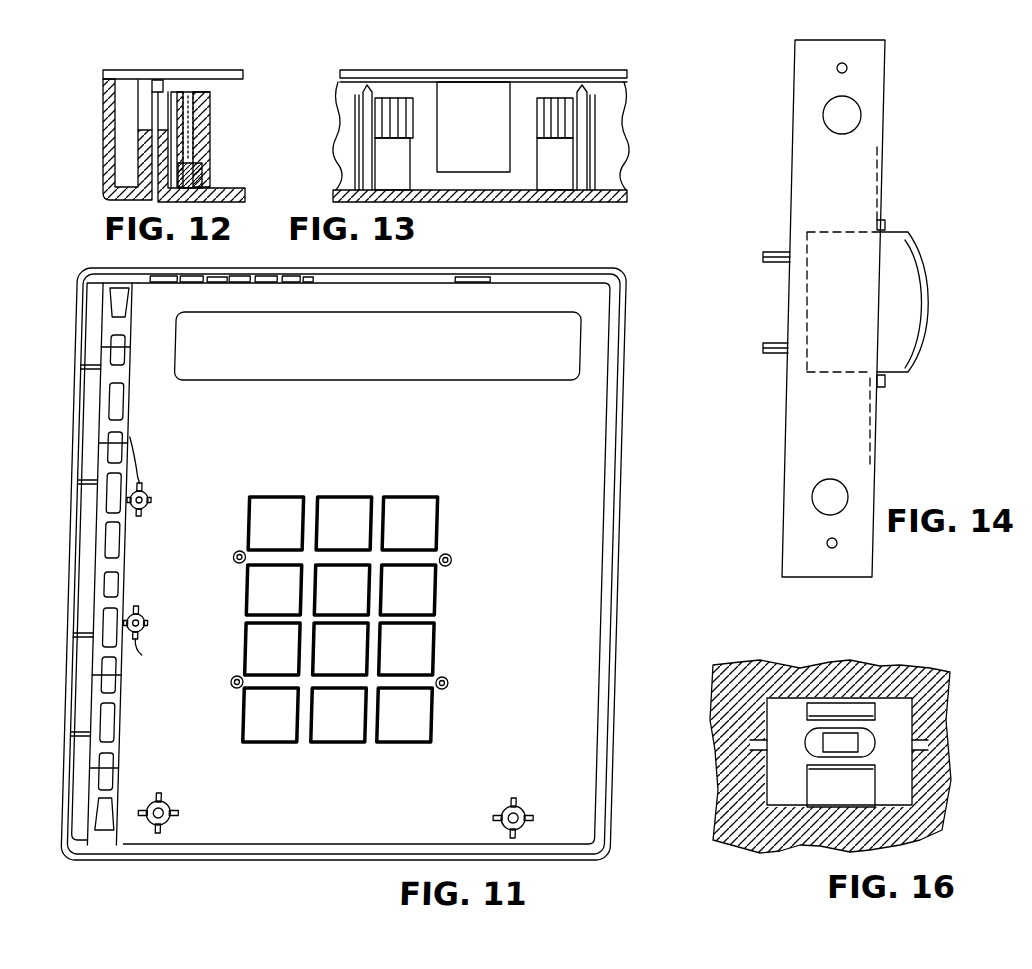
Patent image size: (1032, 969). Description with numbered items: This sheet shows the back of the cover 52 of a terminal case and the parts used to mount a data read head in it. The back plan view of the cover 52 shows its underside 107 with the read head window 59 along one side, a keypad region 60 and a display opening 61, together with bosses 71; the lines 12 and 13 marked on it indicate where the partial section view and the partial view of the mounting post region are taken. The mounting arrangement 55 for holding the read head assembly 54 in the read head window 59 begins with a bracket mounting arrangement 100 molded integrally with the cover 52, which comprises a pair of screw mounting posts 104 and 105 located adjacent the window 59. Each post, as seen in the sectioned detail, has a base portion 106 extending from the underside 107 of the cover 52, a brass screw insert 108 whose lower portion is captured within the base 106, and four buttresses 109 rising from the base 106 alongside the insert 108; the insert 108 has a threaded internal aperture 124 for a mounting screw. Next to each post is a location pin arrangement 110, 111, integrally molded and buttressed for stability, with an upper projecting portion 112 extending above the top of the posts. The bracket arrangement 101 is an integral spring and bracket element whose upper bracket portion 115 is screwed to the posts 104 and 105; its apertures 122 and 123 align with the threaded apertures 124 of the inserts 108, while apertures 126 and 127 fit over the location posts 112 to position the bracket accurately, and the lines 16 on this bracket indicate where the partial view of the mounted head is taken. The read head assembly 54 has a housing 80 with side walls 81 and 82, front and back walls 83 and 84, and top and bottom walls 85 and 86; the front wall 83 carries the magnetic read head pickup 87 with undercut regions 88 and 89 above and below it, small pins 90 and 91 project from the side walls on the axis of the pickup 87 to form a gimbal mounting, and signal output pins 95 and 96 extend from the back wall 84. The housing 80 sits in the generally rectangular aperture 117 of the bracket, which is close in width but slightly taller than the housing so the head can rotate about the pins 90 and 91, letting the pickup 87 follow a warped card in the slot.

In FIG. 11, the cover 52 is at (630, 560).
In FIG. 11, the read head window 59 is at (142, 542).
In FIG. 11, the keypad button openings 60 is at (443, 528).
In FIG. 11, the display window 61 is at (521, 317).
In FIG. 11, the mounting boss 71 is at (545, 805).
In FIG. 11, the bracket mounting arrangement 100 is at (177, 494).
In FIG. 13, the screw mounting post 104 is at (413, 192).
In FIG. 11, the screw mounting post 104 is at (167, 501).
In FIG. 13, the screw mounting post 105 is at (532, 167).
In FIG. 11, the screw mounting post 105 is at (157, 617).
In FIG. 12, the base portion 106 is at (190, 157).
In FIG. 13, the base portion 106 is at (550, 185).
In FIG. 13, the underside 107 is at (603, 193).
In FIG. 12, the brass screw insert 108 is at (203, 183).
In FIG. 13, the brass screw insert 108 is at (557, 98).
In FIG. 11, the brass screw insert 108 is at (162, 495).
In FIG. 12, the buttresses 109 is at (210, 117).
In FIG. 13, the buttresses 109 is at (545, 98).
In FIG. 13, the lead wire 110 is at (588, 132).
In FIG. 11, the lead wire 110 is at (142, 437).
In FIG. 13, the location pin arrangement 111 is at (353, 76).
In FIG. 11, the location pin arrangement 111 is at (160, 655).
In FIG. 13, the upper projecting portion 112 is at (582, 93).
In FIG. 12, the threaded internal aperture 124 is at (187, 92).
In FIG. 11, the section lines 12— 12 is at (140, 675).
In FIG. 11, the section lines 13— 13 is at (140, 435).
In FIG. 14, the view lines 16— 16 is at (948, 168).
In FIG. 14, the read head assembly 54 is at (928, 269).
In FIG. 14, the mounting arrangement 55 is at (786, 430).
In FIG. 14, the housing 80 is at (890, 378).
In FIG. 14, the side wall 81 is at (903, 233).
In FIG. 14, the side wall 82 is at (887, 380).
In FIG. 14, the front wall 83 is at (913, 363).
In FIG. 16, the front wall 83 is at (908, 723).
In FIG. 14, the back wall 84 is at (807, 297).
In FIG. 16, the top wall 85 is at (793, 698).
In FIG. 16, the bottom wall 86 is at (790, 813).
In FIG. 16, the magnetic read head pickup 87 is at (837, 733).
In FIG. 16, the undercut region 88 is at (870, 708).
In FIG. 16, the undercut region 89 is at (863, 782).
In FIG. 16, the pin 90 is at (932, 737).
In FIG. 16, the pin 91 is at (755, 745).
In FIG. 14, the signal output pin 95 is at (770, 350).
In FIG. 14, the signal output pin 96 is at (765, 255).
In FIG. 14, the bracket arrangement 101 is at (886, 154).
In FIG. 14, the upper bracket portion 115 is at (797, 196).
In FIG. 16, the aperture 117 is at (770, 700).
In FIG. 14, the aperture 122 is at (857, 117).
In FIG. 14, the aperture 123 is at (843, 495).
In FIG. 14, the aperture 126 is at (848, 68).
In FIG. 14, the aperture 127 is at (840, 545).